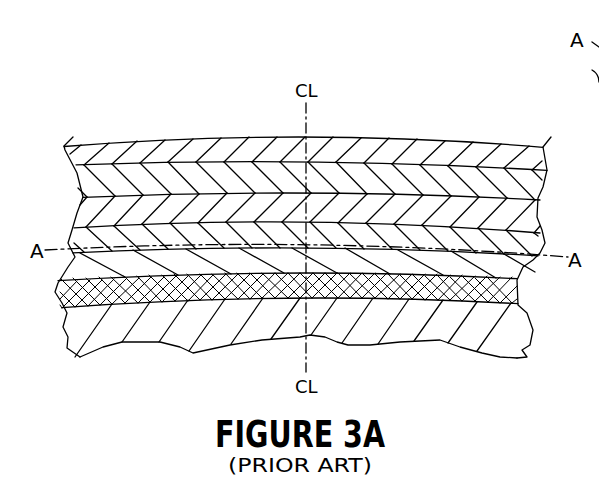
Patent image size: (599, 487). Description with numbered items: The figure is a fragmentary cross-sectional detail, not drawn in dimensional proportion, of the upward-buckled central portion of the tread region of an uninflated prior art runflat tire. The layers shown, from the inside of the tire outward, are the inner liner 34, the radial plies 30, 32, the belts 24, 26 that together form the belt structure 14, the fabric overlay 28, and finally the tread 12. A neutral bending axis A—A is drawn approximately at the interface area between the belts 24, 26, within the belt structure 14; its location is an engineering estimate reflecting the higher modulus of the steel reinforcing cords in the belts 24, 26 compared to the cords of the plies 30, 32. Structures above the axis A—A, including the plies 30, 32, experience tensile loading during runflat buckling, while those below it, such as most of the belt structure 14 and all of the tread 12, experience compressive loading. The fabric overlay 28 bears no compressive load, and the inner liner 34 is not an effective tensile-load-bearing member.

The tread 12 is at (148, 325).
The belt structure 14 is at (443, 257).
The belt 24 is at (408, 265).
The belt 26 is at (360, 236).
The fabric overlay 28 is at (405, 288).
The ply 30 is at (190, 183).
The second ply 32 is at (253, 217).
The inner liner 34 is at (138, 156).